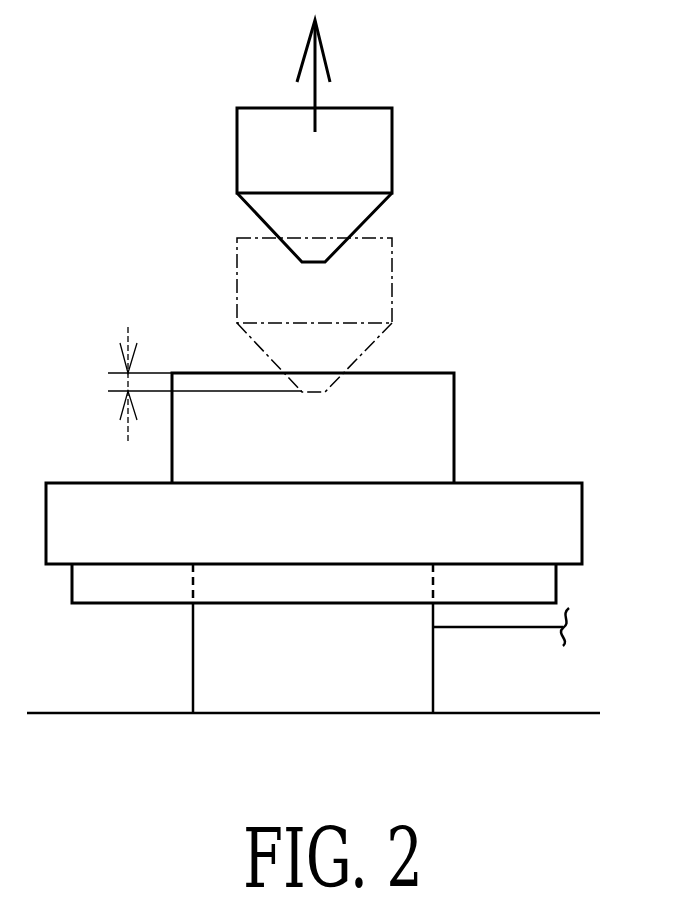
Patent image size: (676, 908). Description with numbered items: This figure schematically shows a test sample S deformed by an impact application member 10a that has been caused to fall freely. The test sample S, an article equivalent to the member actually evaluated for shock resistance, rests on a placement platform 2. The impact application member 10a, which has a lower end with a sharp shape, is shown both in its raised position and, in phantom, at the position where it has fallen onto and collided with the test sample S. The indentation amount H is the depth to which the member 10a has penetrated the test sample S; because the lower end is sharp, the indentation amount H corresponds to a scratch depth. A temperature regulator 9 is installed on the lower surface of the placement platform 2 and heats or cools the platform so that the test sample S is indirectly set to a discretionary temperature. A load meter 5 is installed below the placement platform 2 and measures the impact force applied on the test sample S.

The impact application member 10a is at (247, 175).
The test sample S is at (422, 388).
The placement platform 2 is at (513, 497).
The temperature regulator 9 is at (540, 583).
The load meter 5 is at (210, 674).
The indentation amount H is at (193, 384).